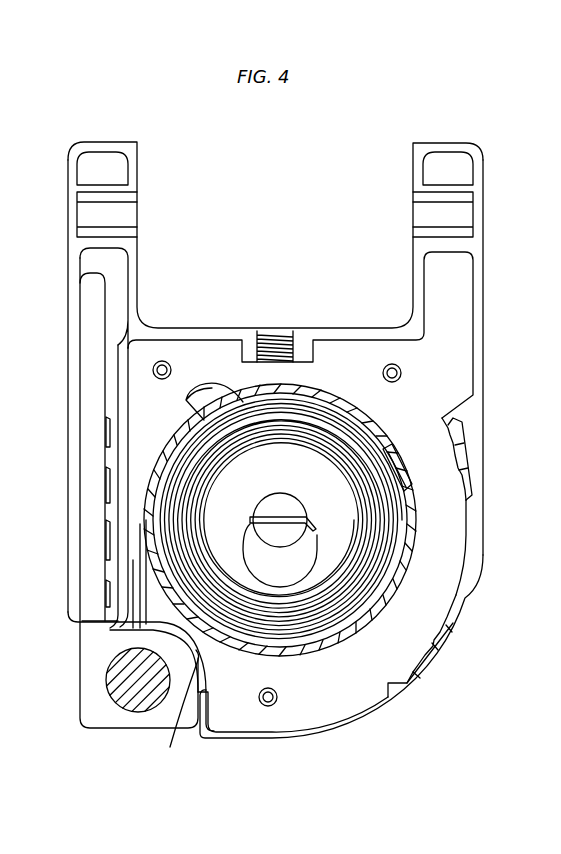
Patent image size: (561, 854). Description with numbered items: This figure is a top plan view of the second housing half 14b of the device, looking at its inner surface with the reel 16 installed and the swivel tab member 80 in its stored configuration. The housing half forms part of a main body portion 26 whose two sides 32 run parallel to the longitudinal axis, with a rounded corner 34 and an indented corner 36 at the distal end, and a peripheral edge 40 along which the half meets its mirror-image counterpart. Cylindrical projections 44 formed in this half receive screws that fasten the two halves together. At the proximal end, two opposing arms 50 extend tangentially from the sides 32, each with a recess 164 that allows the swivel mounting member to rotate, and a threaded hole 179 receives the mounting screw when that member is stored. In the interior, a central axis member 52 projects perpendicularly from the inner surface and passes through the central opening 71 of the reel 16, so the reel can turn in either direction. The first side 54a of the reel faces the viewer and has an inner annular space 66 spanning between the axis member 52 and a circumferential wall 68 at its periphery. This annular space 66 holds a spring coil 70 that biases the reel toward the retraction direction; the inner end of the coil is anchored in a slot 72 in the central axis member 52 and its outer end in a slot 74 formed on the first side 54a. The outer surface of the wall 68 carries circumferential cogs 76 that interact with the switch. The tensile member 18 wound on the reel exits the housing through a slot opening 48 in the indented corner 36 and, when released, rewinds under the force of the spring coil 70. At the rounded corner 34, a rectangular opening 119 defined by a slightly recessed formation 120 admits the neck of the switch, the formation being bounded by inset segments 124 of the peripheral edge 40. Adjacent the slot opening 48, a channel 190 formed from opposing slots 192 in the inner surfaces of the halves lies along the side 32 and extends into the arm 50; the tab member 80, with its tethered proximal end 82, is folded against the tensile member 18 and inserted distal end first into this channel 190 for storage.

The second housing half 14b is at (413, 723).
The reel 16 is at (326, 405).
The tensile member 18 is at (138, 582).
The main body portion 26 is at (440, 580).
The sides 32 is at (67, 467).
The rounded corner 34 is at (427, 700).
The indented corner 36 is at (170, 747).
The peripheral edge 40 is at (484, 328).
The cylindrical projections 44 is at (162, 360).
The slot opening 48 is at (167, 631).
The opposing arms 50 is at (76, 150).
The central axis member 52 is at (282, 504).
The first side of the reel 54a is at (286, 505).
The inner annular space 66 is at (327, 507).
The circumferential wall 68 is at (360, 412).
The spring coil 70 is at (255, 427).
The central opening 71 is at (267, 547).
The slot in the central axis member 72 is at (265, 511).
The slot on the reel 74 is at (405, 462).
The circumferential cogs 76 is at (187, 397).
The swivel tab member 80 is at (90, 428).
The tethered proximal end 82 is at (90, 730).
The rectangular opening 119 is at (463, 557).
The recessed formation 120 is at (470, 447).
The inset segments 124 is at (472, 423).
The recess 164 is at (128, 214).
The threaded hole 179 is at (284, 333).
The channel 190 is at (107, 628).
The opposing slots 192 is at (103, 262).